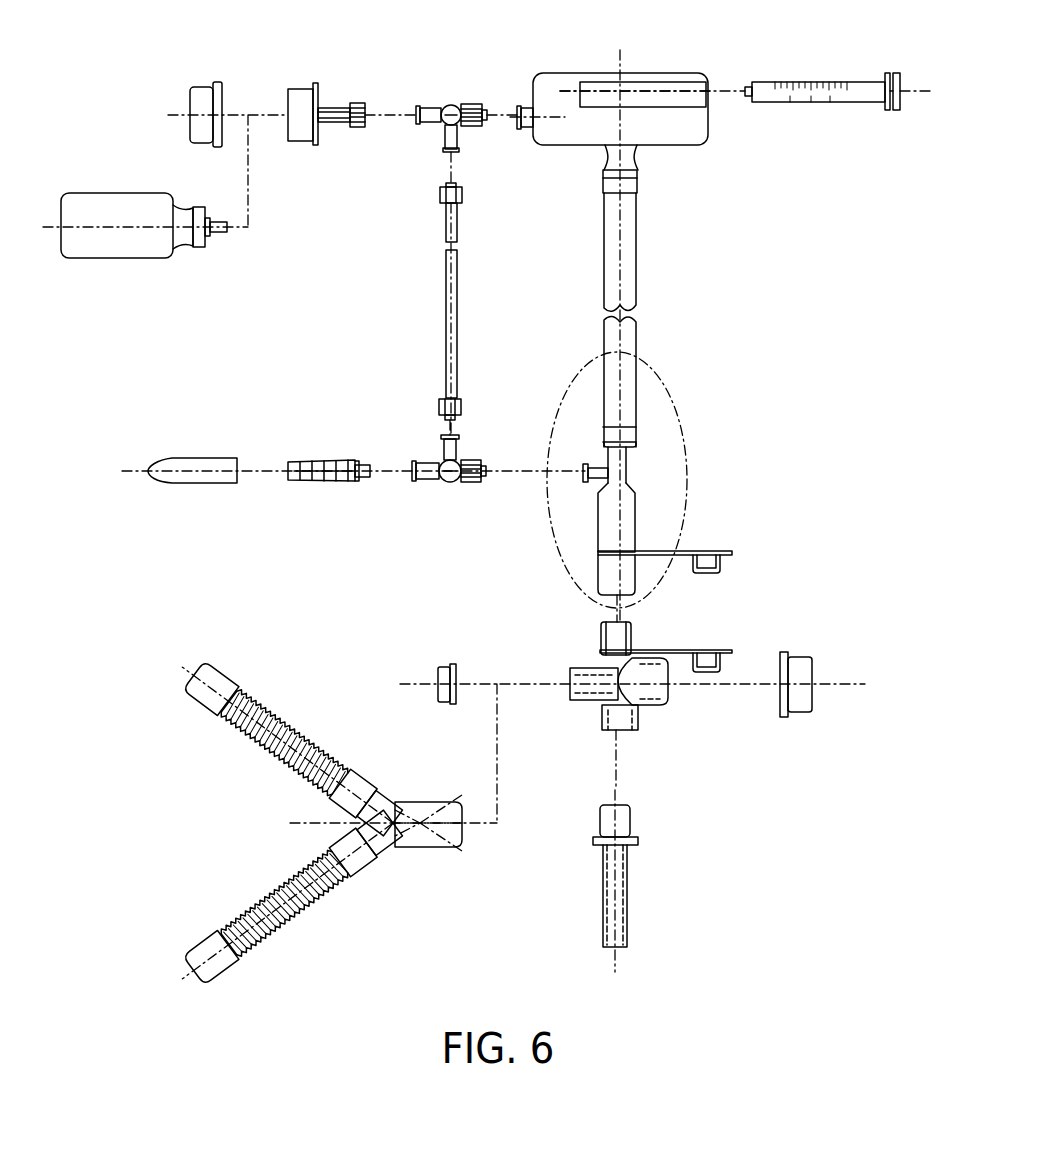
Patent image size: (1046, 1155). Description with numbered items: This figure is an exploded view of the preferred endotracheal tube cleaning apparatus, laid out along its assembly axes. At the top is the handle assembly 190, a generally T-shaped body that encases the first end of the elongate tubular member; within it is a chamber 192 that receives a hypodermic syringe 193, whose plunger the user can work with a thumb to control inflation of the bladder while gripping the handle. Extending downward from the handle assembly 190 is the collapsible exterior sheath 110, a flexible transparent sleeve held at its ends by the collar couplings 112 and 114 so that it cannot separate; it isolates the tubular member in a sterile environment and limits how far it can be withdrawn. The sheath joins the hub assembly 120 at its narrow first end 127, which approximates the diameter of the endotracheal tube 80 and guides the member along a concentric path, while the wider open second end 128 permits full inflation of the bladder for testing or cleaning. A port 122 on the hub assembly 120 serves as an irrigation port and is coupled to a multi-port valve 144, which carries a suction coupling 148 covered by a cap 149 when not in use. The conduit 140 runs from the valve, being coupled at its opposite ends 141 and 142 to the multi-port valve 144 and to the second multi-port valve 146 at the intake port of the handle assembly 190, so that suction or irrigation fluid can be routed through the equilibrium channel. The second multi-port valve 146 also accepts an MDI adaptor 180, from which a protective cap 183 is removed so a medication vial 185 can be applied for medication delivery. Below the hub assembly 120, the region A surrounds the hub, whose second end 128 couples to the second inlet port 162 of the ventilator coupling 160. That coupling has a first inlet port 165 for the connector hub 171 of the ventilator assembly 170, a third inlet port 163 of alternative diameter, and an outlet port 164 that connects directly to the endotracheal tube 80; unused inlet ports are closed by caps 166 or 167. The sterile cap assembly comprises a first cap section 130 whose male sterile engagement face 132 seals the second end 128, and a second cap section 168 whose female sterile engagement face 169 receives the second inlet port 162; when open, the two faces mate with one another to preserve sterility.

The endotracheal tube 80 is at (636, 880).
The collapsible exterior sheath 110 is at (632, 278).
The collar coupling 112 is at (637, 185).
The collar coupling 114 is at (626, 432).
The hub assembly 120 is at (640, 517).
The port 122 is at (586, 478).
The first end 127 is at (622, 457).
The second end 128 is at (628, 577).
The first cap section 130 is at (720, 544).
The sterile engagement face 132 is at (722, 566).
The conduit 140 is at (446, 323).
The end of conduit 141 is at (462, 200).
The end of conduit 142 is at (461, 405).
The multi-port valve 144 is at (427, 481).
The second multi-port valve 146 is at (451, 104).
The suction coupling 148 is at (313, 481).
The cap 149 is at (178, 477).
The ventilator coupling 160 is at (665, 685).
The second inlet port 162 is at (600, 635).
The third inlet port 163 is at (667, 700).
The outlet port 164 is at (605, 728).
The first inlet port 165 is at (578, 700).
The cap 166 is at (440, 668).
The cap 167 is at (805, 702).
The second cap section 168 is at (714, 655).
The sterile engagement face 169 is at (708, 650).
The ventilator assembly 170 is at (349, 823).
The connector hub 171 is at (452, 838).
The MDI adaptor 180 is at (337, 98).
The protective cap 183 is at (200, 93).
The medication vial 185 is at (130, 247).
The handle assembly 190 is at (647, 88).
The chamber 192 is at (700, 85).
The hypodermic syringe 193 is at (787, 103).
The region A is at (677, 400).